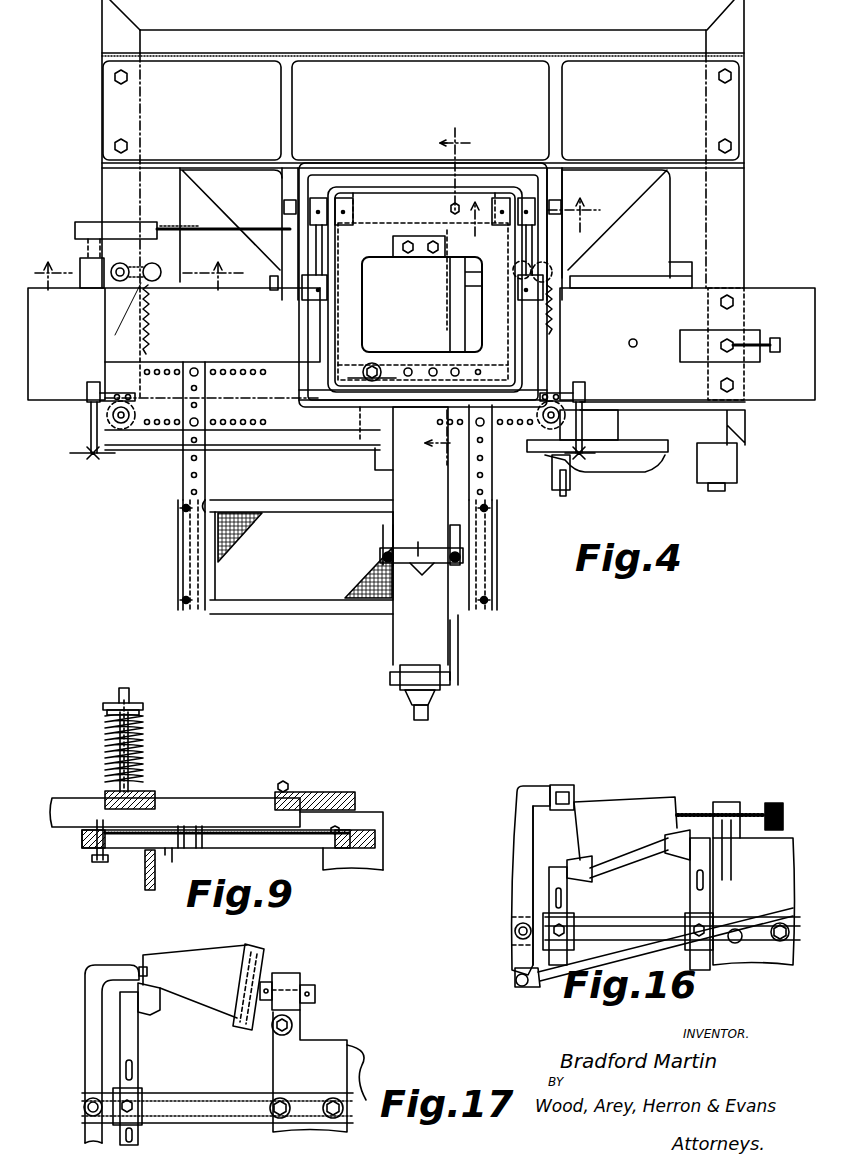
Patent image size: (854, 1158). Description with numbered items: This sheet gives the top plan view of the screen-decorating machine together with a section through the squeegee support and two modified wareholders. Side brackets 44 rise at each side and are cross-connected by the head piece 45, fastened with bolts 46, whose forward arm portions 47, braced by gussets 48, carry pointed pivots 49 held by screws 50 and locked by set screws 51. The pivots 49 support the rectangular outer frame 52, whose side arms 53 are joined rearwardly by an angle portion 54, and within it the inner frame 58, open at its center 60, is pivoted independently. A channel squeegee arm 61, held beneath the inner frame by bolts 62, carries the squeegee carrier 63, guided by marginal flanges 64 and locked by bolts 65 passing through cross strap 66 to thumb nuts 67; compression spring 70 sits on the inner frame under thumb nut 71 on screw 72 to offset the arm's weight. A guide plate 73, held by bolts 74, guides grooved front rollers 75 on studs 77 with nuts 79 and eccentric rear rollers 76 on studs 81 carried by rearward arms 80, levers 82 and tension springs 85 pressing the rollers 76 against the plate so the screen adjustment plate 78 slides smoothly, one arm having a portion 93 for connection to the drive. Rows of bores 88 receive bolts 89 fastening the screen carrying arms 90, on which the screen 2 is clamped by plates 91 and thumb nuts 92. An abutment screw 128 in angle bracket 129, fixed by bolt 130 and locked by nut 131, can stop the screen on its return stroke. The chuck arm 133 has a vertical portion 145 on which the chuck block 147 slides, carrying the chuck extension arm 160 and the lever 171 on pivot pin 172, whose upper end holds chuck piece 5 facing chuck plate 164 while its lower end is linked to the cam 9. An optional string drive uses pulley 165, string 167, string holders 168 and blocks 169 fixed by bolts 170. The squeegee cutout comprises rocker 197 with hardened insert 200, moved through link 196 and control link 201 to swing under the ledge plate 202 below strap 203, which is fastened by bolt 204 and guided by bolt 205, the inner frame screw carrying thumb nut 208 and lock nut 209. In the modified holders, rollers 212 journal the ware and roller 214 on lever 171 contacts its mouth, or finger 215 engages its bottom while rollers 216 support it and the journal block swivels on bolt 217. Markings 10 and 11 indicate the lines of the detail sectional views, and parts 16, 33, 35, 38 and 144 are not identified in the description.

In FIG. 4, the screen 2 is at (292, 597).
In FIG. 4, the chuck piece 5 is at (440, 700).
In FIG. 4, the cam 9 is at (440, 294).
In FIG. 4, the section line 10- 10 is at (542, 227).
In FIG. 4, the section line 11- 11 is at (137, 262).
In FIG. 4, the head frame 16 is at (735, 20).
In FIG. 4, the motor box 33 is at (738, 462).
In FIG. 9, the lower plate block 35 is at (80, 843).
In FIG. 4, the bracket plate 38 is at (648, 408).
In FIG. 4, the side brackets 44 is at (108, 177).
In FIG. 4, the head piece 45 is at (372, 70).
In FIG. 4, the bolts 46 is at (123, 139).
In FIG. 4, the arm portions 47 is at (280, 200).
In FIG. 4, the gussets 48 is at (222, 200).
In FIG. 4, the pivot members 49 is at (300, 288).
In FIG. 4, the screws 50 is at (268, 283).
In FIG. 4, the set screws 51 is at (302, 295).
In FIG. 4, the rectangular frame 52 is at (306, 332).
In FIG. 9, the rectangular frame 52 is at (386, 820).
In FIG. 4, the side arms 53 is at (312, 349).
In FIG. 4, the angle portion 54 is at (378, 180).
In FIG. 9, the angle portion 54 is at (386, 844).
In FIG. 4, the inner frame 58 is at (358, 262).
In FIG. 9, the inner frame 58 is at (330, 790).
In FIG. 4, the open central portion 60 is at (372, 265).
In FIG. 4, the squeegee arm 61 is at (400, 497).
In FIG. 9, the squeegee arm 61 is at (205, 810).
In FIG. 4, the bolts 62 is at (433, 366).
In FIG. 9, the bolts 62 is at (288, 786).
In FIG. 4, the squeegee carrier 63 is at (382, 531).
In FIG. 4, the marginal flanges 64 is at (380, 546).
In FIG. 4, the bolts 65 is at (380, 557).
In FIG. 4, the cross strap 66 is at (421, 540).
In FIG. 4, the thumb nuts 67 is at (422, 573).
In FIG. 9, the compression spring 70 is at (142, 736).
In FIG. 4, the thumb nut 71 is at (362, 376).
In FIG. 9, the thumb nut 71 is at (130, 700).
In FIG. 4, the screw 72 is at (368, 364).
In FIG. 9, the screw 72 is at (116, 689).
In FIG. 4, the guide plate 73 is at (89, 410).
In FIG. 4, the bolts 74 is at (735, 305).
In FIG. 4, the front rollers 75 is at (122, 425).
In FIG. 4, the rear rollers 76 is at (130, 268).
In FIG. 4, the studs 77 is at (112, 418).
In FIG. 4, the screen adjustment plate 78 is at (288, 422).
In FIG. 4, the nuts 79 is at (110, 425).
In FIG. 4, the arms 80 is at (118, 350).
In FIG. 4, the studs 81 is at (118, 280).
In FIG. 4, the levers 82 is at (156, 281).
In FIG. 4, the tension springs 85 is at (138, 306).
In FIG. 4, the bores 88 is at (165, 395).
In FIG. 4, the bolts 89 is at (200, 410).
In FIG. 4, the screen carrying arms 90 is at (190, 483).
In FIG. 4, the plates 91 is at (195, 565).
In FIG. 4, the thumb nuts 92 is at (182, 509).
In FIG. 4, the portion 93 is at (93, 267).
In FIG. 4, the abutment screw 128 is at (722, 352).
In FIG. 4, the angle bracket 129 is at (692, 332).
In FIG. 4, the bolt 130 is at (651, 344).
In FIG. 4, the nut 131 is at (745, 343).
In FIG. 16, the chuck arm 133 is at (793, 952).
In FIG. 17, the chuck arm 133 is at (366, 1075).
In FIG. 9, the side wall 144 is at (372, 860).
In FIG. 4, the vertically extending portion 145 is at (378, 474).
In FIG. 16, the chuck block 147 is at (760, 872).
In FIG. 17, the chuck block 147 is at (333, 1050).
In FIG. 16, the chuck extension arm 160 is at (637, 920).
In FIG. 17, the chuck extension arm 160 is at (215, 1098).
In FIG. 17, the chuck plate 164 is at (262, 958).
In FIG. 4, the pulley 165 is at (380, 448).
In FIG. 4, the string 167 is at (326, 450).
In FIG. 4, the string holders 168 is at (92, 458).
In FIG. 4, the blocks 169 is at (87, 387).
In FIG. 4, the bolts 170 is at (86, 392).
In FIG. 4, the lever 171 is at (430, 712).
In FIG. 16, the lever 171 is at (518, 893).
In FIG. 17, the lever 171 is at (84, 1028).
In FIG. 17, the pivot pin 172 is at (80, 1107).
In FIG. 16, the link 196 is at (632, 953).
In FIG. 9, the rocker 197 is at (148, 885).
In FIG. 9, the metal insert 200 is at (168, 862).
In FIG. 9, the control link 201 is at (106, 752).
In FIG. 4, the plate 202 is at (452, 376).
In FIG. 9, the plate 202 is at (182, 848).
In FIG. 4, the strap 203 is at (450, 320).
In FIG. 9, the strap 203 is at (238, 848).
In FIG. 4, the bolt 204 is at (450, 211).
In FIG. 9, the bolt 204 is at (345, 826).
In FIG. 9, the bolt 205 is at (93, 848).
In FIG. 4, the thumb nut 208 is at (487, 379).
In FIG. 9, the thumb nut 208 is at (112, 735).
In FIG. 9, the lock thumb nut 209 is at (112, 790).
In FIG. 16, the rollers 212 is at (660, 850).
In FIG. 16, the roller 214 is at (575, 797).
In FIG. 16, the finger 215 is at (774, 802).
In FIG. 17, the finger 215 is at (146, 965).
In FIG. 17, the rollers 216 is at (152, 1010).
In FIG. 17, the bolt 217 is at (292, 1025).